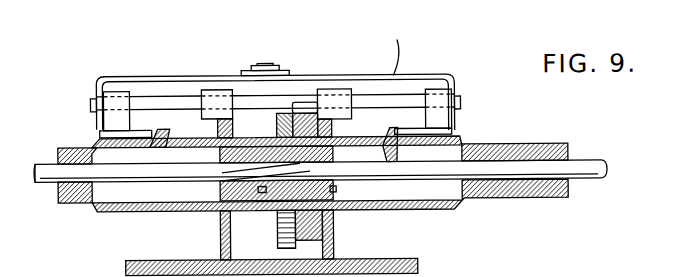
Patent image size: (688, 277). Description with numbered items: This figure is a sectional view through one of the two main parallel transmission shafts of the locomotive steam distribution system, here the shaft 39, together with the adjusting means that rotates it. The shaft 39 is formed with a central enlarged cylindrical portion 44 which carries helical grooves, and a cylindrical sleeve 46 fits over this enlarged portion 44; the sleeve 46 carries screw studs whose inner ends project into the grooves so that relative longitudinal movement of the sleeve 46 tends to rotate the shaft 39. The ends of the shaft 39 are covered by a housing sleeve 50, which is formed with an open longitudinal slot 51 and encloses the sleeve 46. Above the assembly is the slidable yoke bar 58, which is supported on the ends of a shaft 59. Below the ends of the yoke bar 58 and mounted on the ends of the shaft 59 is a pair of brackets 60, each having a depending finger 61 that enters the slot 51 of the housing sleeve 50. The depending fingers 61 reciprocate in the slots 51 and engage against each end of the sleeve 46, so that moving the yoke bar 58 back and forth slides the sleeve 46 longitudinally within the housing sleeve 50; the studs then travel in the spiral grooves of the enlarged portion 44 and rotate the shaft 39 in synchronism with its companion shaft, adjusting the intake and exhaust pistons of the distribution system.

The shaft 39 is at (597, 162).
The central enlarged cylindrical portion 44 is at (338, 197).
The cylindrical sleeve 46 is at (378, 192).
The housing sleeve 50 is at (85, 203).
The longitudinal slot 51 is at (127, 140).
The slidable yoke bar 58 is at (457, 74).
The shaft 59 is at (157, 104).
The bracket 60 is at (110, 121).
The depending finger 61 is at (168, 144).